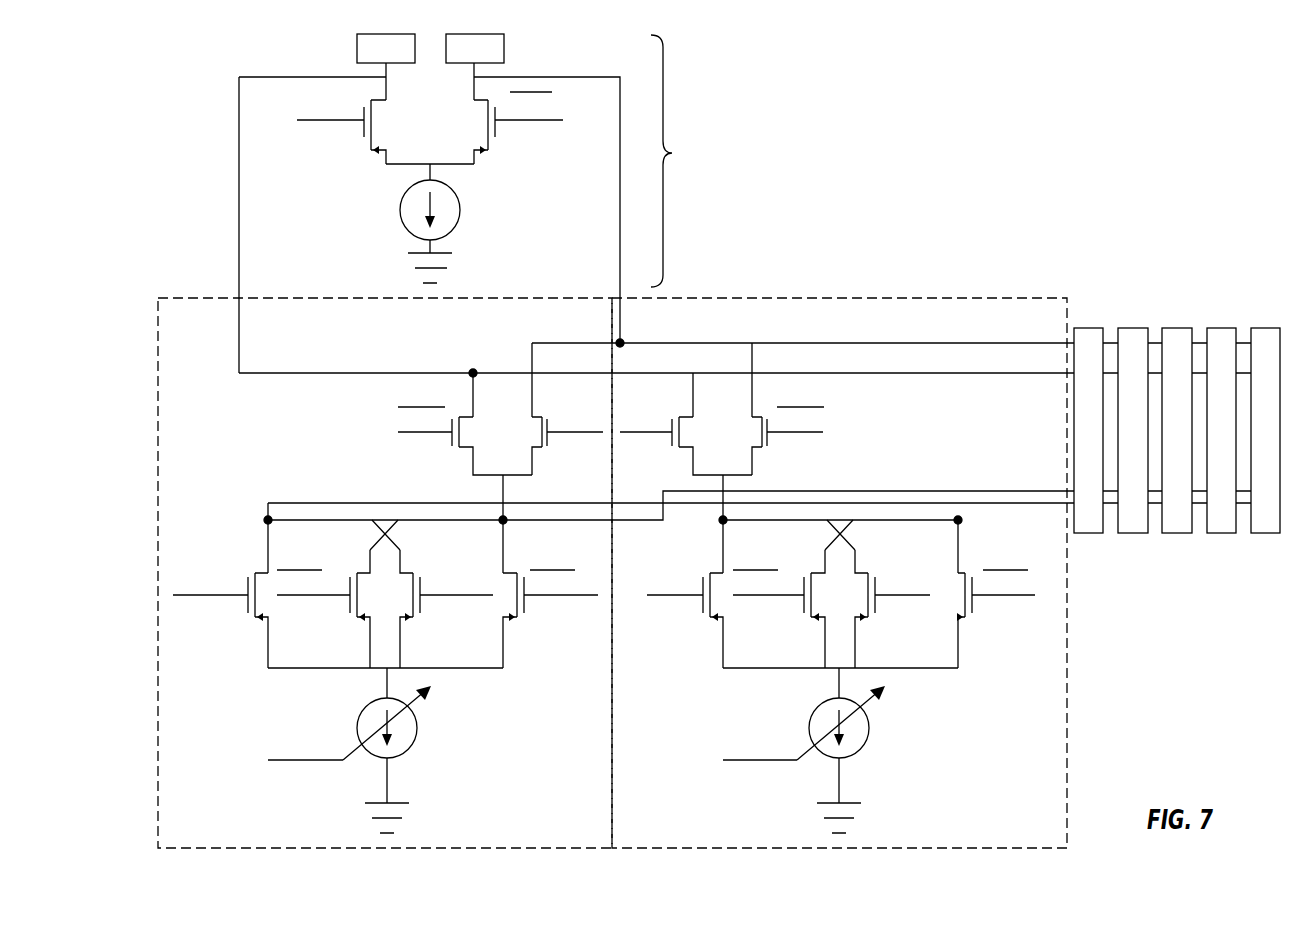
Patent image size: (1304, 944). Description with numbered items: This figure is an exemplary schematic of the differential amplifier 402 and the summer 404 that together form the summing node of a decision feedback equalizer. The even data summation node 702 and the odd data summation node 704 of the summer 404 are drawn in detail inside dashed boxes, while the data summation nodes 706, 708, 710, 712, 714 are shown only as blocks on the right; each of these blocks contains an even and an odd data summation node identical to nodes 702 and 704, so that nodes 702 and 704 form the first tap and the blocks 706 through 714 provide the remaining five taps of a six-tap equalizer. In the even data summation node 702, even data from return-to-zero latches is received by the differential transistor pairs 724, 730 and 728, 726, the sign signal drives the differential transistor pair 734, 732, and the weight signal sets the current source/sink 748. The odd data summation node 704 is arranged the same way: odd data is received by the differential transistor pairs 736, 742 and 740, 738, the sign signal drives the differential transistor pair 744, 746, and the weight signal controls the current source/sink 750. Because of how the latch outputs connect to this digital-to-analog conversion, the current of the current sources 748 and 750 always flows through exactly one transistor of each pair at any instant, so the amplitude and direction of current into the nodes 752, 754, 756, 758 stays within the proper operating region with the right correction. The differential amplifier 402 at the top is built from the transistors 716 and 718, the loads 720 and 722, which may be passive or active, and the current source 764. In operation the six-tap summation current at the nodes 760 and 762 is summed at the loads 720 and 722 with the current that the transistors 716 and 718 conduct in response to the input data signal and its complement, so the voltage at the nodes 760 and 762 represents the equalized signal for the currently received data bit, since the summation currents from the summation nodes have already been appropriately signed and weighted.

The differential amplifier 402 is at (681, 161).
The summer 404 is at (1200, 192).
The even data summation node 702 is at (503, 298).
The odd data summation node 704 is at (968, 298).
The data summation node 706 is at (1087, 327).
The data summation node 708 is at (1133, 534).
The data summation node 710 is at (1175, 327).
The data summation node 712 is at (1222, 534).
The data summation node 714 is at (1275, 534).
The transistor 716 is at (387, 120).
The transistor 718 is at (473, 127).
The load 720 is at (357, 41).
The load 722 is at (504, 41).
The differential transistor pair transistor 724 is at (270, 598).
The differential transistor pair transistor 726 is at (363, 600).
The differential transistor pair transistor 728 is at (400, 595).
The differential transistor pair transistor 730 is at (507, 598).
The differential transistor pair transistor 732 is at (472, 430).
The differential transistor pair transistor 734 is at (528, 430).
The differential transistor pair transistor 736 is at (725, 598).
The differential transistor pair transistor 738 is at (815, 600).
The differential transistor pair transistor 740 is at (852, 595).
The differential transistor pair transistor 742 is at (960, 598).
The differential transistor pair transistor 744 is at (692, 430).
The differential transistor pair transistor 746 is at (748, 430).
The current source/sink 748 is at (418, 728).
The current source/sink 750 is at (870, 728).
The node 752 is at (268, 520).
The node 754 is at (505, 521).
The node 756 is at (722, 521).
The node 758 is at (960, 521).
The node 760 is at (473, 371).
The node 762 is at (621, 345).
The current source 764 is at (460, 208).